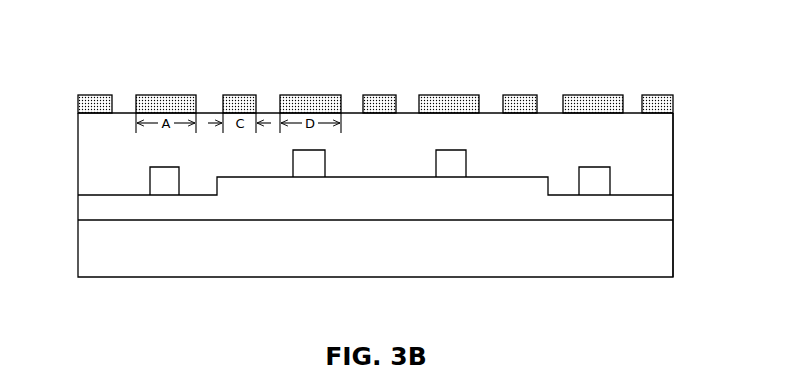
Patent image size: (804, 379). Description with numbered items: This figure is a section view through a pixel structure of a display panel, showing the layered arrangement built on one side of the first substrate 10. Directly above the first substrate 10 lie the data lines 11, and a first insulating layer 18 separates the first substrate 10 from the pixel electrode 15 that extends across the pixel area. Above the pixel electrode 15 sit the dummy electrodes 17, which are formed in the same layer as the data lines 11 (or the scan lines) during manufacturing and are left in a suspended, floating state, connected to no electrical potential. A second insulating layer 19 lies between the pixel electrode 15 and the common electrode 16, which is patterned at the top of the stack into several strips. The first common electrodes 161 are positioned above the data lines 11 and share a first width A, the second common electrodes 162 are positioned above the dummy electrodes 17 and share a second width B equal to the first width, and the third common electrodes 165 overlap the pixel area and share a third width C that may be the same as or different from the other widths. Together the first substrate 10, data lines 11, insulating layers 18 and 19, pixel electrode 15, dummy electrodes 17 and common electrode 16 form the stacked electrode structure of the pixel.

The first substrate 10 is at (413, 240).
The data lines 11 is at (166, 180).
The pixel electrode 15 is at (507, 185).
The common electrode 16 is at (375, 57).
The first common electrodes 161 is at (172, 95).
The second common electrodes 162 is at (310, 77).
The third common electrodes 165 is at (238, 95).
The dummy electrodes 17 is at (312, 167).
The first insulating layer 18 is at (570, 208).
The second insulating layer 19 is at (623, 180).